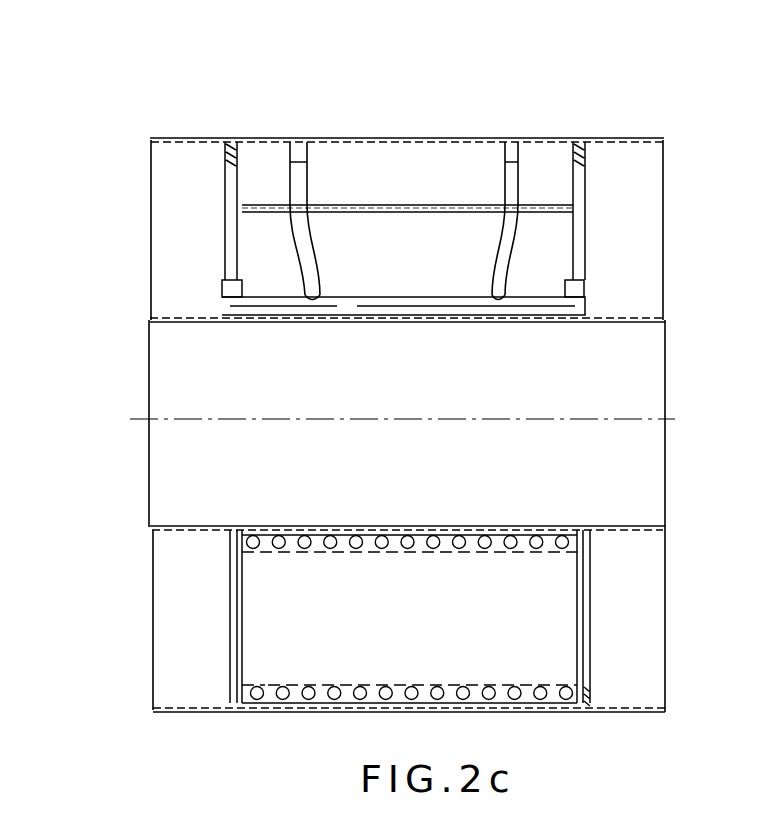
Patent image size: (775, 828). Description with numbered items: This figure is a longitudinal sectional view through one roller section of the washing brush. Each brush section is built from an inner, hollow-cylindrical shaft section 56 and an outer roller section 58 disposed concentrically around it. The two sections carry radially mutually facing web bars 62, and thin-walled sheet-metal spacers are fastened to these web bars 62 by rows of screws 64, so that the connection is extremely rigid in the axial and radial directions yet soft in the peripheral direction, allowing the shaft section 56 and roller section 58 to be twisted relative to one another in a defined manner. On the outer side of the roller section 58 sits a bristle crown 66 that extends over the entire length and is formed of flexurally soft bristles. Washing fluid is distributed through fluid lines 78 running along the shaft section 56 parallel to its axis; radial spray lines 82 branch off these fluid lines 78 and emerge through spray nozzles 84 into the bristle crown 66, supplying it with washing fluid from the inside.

The shaft section 56 is at (602, 523).
The roller section 58 is at (622, 713).
The web bars 62 is at (285, 530).
The screws 64 is at (510, 550).
The bristle crown 66 is at (300, 653).
The fluid lines 78 is at (445, 305).
The radial spray lines 82 is at (505, 182).
The spray nozzles 84 is at (293, 155).